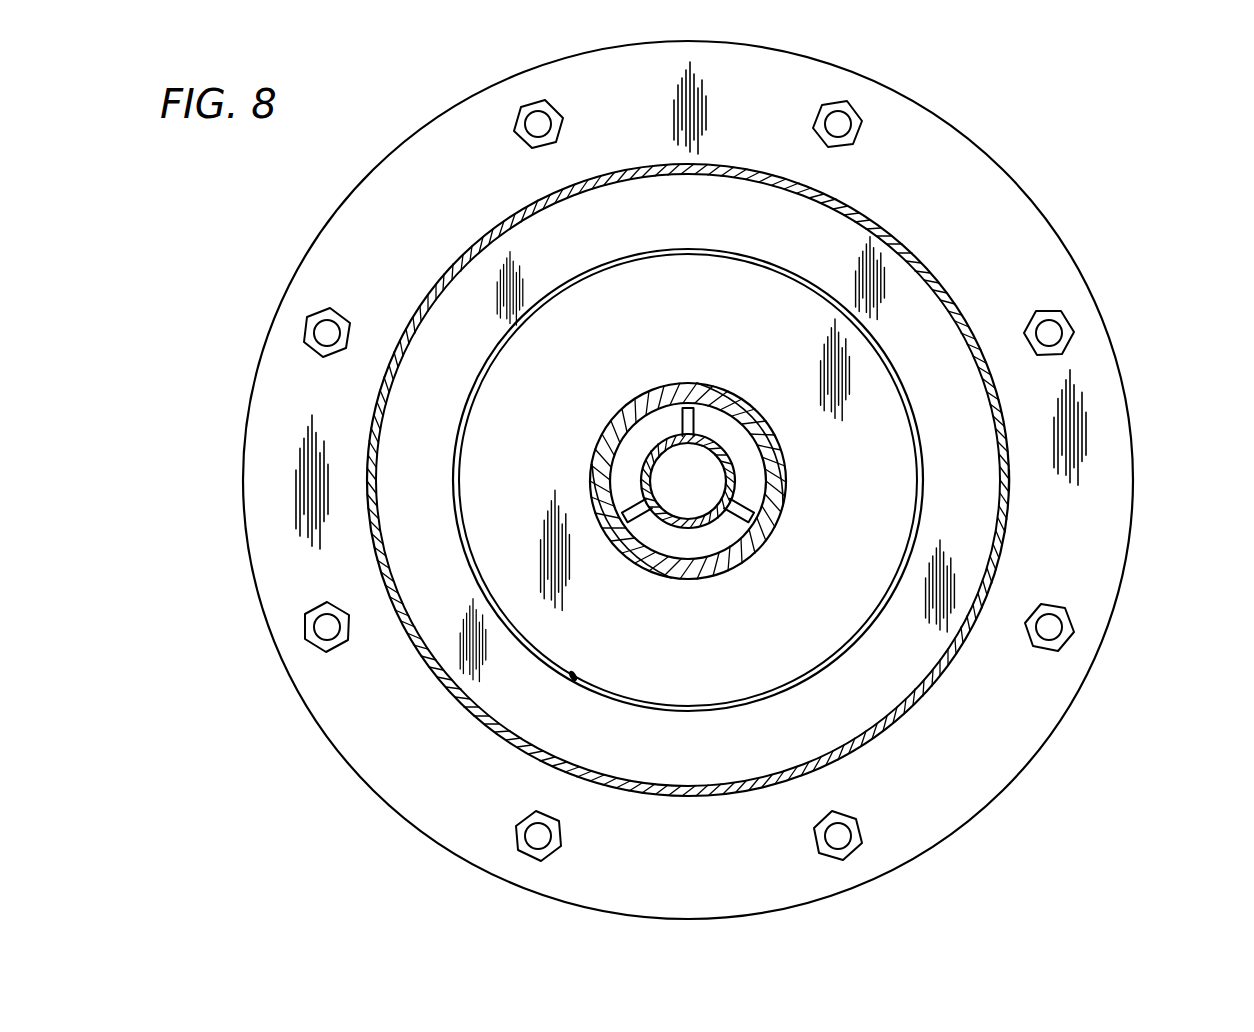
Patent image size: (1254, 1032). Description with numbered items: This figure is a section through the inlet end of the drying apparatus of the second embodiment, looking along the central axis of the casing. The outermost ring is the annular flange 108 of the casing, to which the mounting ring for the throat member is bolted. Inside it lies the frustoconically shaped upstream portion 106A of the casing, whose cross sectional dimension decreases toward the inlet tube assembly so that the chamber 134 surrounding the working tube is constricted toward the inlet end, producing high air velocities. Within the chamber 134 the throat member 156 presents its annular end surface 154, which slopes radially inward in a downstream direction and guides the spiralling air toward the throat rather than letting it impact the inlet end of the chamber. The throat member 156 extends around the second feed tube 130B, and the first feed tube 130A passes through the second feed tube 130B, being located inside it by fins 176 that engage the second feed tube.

The annular flange 108 is at (932, 143).
The upstream portion 106A is at (1010, 520).
The chamber 134 is at (567, 236).
The annular end surface 154 is at (790, 305).
The throat member 156 is at (575, 672).
The second feed tube 130B is at (641, 404).
The first feed tube 130A is at (737, 487).
The fins 176 is at (700, 425).